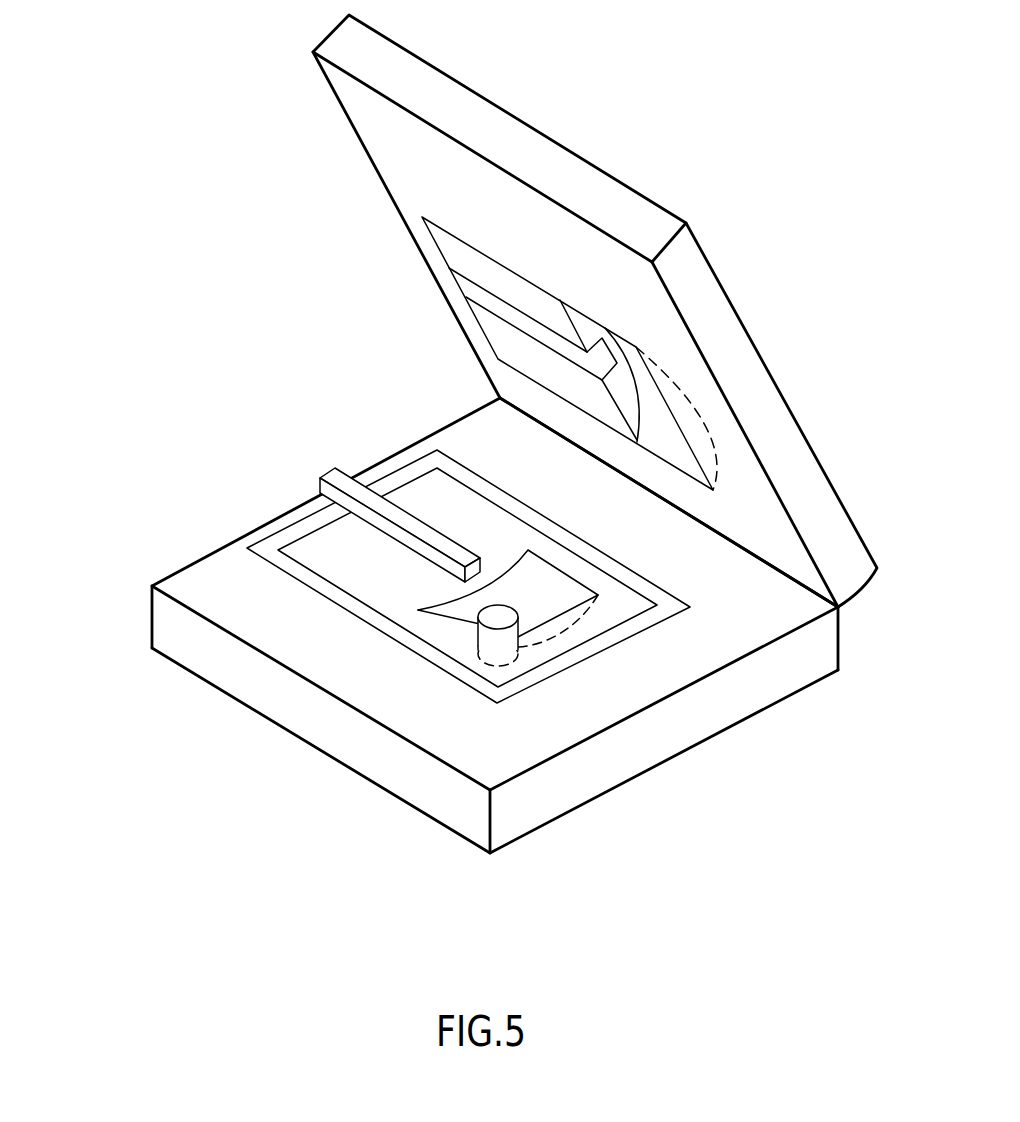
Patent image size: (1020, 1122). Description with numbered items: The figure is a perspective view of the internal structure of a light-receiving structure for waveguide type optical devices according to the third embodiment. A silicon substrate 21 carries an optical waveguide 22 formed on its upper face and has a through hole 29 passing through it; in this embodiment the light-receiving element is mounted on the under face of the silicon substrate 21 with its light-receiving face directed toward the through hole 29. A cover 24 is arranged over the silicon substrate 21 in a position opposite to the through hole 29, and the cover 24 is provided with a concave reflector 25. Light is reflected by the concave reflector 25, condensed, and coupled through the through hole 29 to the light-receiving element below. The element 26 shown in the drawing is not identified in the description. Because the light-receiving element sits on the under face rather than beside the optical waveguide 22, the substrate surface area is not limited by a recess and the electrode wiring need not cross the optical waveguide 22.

The silicon substrate 21 is at (218, 568).
The optical waveguide 22 is at (322, 476).
The cover 24 is at (608, 205).
The concave reflector 25 is at (690, 410).
The slot window 26 is at (443, 268).
The through hole 29 is at (480, 622).